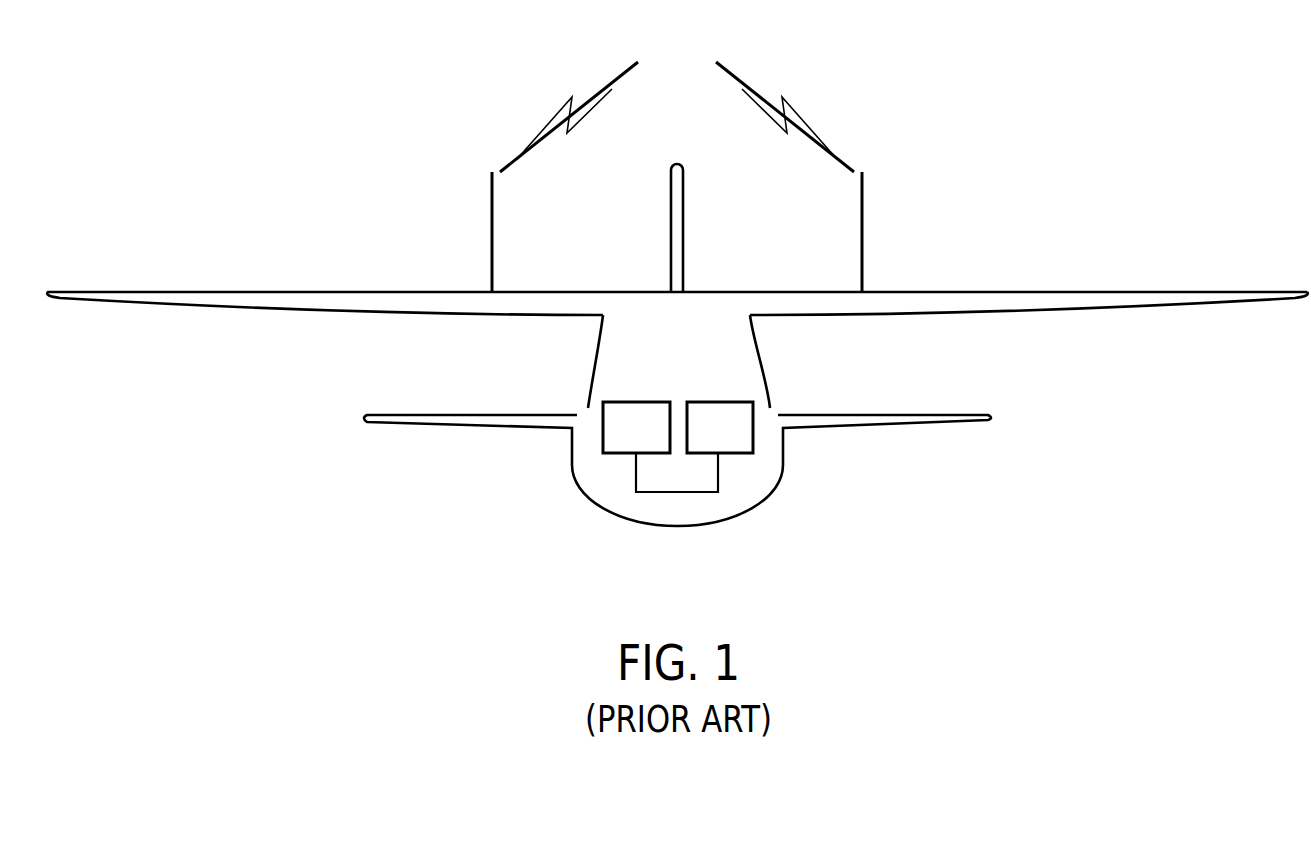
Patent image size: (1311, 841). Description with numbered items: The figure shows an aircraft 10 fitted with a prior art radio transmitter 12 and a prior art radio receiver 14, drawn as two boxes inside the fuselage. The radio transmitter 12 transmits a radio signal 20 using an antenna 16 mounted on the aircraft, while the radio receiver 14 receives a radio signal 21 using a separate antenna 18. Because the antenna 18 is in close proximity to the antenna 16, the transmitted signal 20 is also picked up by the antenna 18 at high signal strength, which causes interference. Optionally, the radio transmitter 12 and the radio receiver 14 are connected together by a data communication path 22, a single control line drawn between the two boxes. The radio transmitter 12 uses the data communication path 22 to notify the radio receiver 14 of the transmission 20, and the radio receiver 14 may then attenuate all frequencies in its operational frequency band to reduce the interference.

The aircraft 10 is at (579, 484).
The radio transmitter 12 is at (603, 423).
The radio receiver 14 is at (753, 423).
The antenna 16 is at (492, 232).
The antenna 18 is at (862, 232).
The radio signal 20 is at (604, 90).
The radio signal 21 is at (750, 90).
The data communication path 22 is at (672, 492).